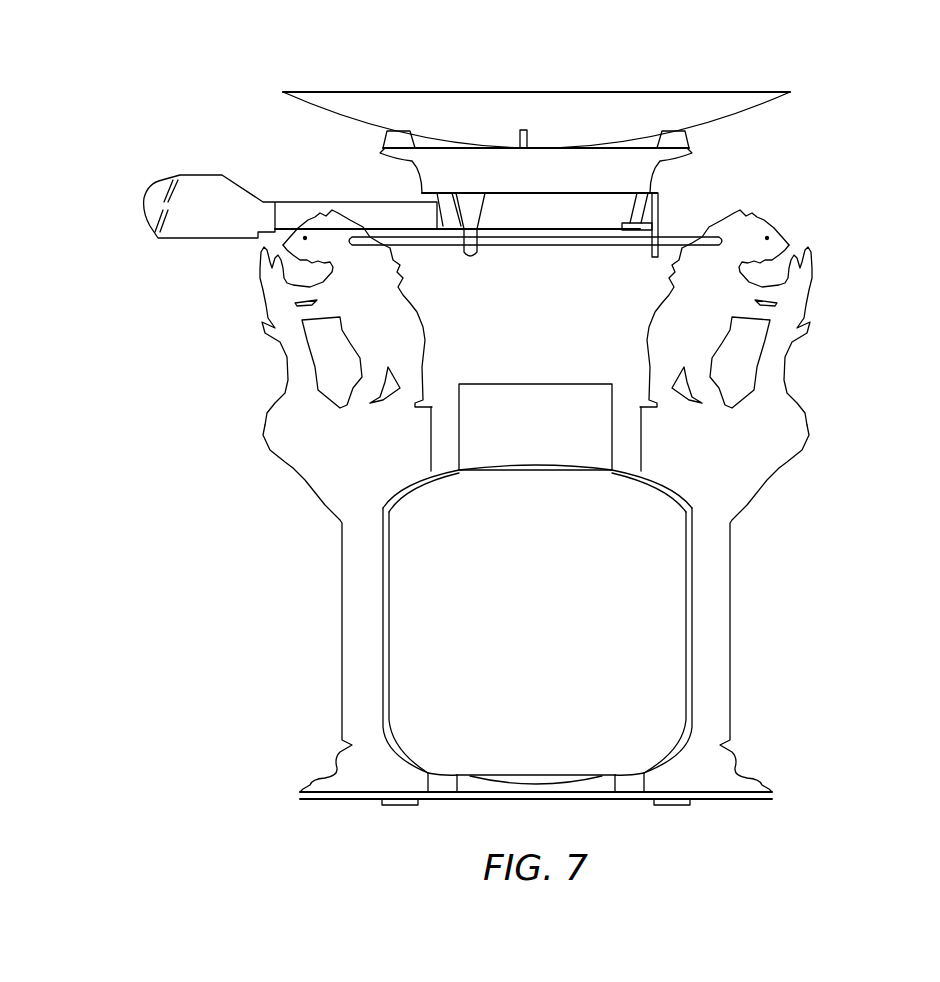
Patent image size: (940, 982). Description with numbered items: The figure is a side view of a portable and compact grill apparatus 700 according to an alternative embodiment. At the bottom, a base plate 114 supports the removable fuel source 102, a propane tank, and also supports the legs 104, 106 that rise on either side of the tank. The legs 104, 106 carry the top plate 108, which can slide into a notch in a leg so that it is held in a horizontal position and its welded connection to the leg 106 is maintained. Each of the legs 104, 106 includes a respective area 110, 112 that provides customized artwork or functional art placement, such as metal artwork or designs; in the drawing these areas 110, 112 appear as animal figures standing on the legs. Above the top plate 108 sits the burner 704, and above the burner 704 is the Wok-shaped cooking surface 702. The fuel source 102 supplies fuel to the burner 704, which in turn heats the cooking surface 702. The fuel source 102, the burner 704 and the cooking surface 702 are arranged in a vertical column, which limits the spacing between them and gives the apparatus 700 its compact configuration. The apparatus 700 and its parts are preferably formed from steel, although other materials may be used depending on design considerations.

The portable and compact grill apparatus 700 is at (62, 258).
The cooking surface 702 is at (423, 88).
The burner 704 is at (378, 163).
The top plate 108 is at (690, 238).
The area for customized artwork 110 is at (258, 294).
The area for customized artwork 112 is at (815, 294).
The leg 104 is at (293, 470).
The leg 106 is at (731, 600).
The fuel source 102 is at (572, 630).
The base plate 114 is at (622, 800).